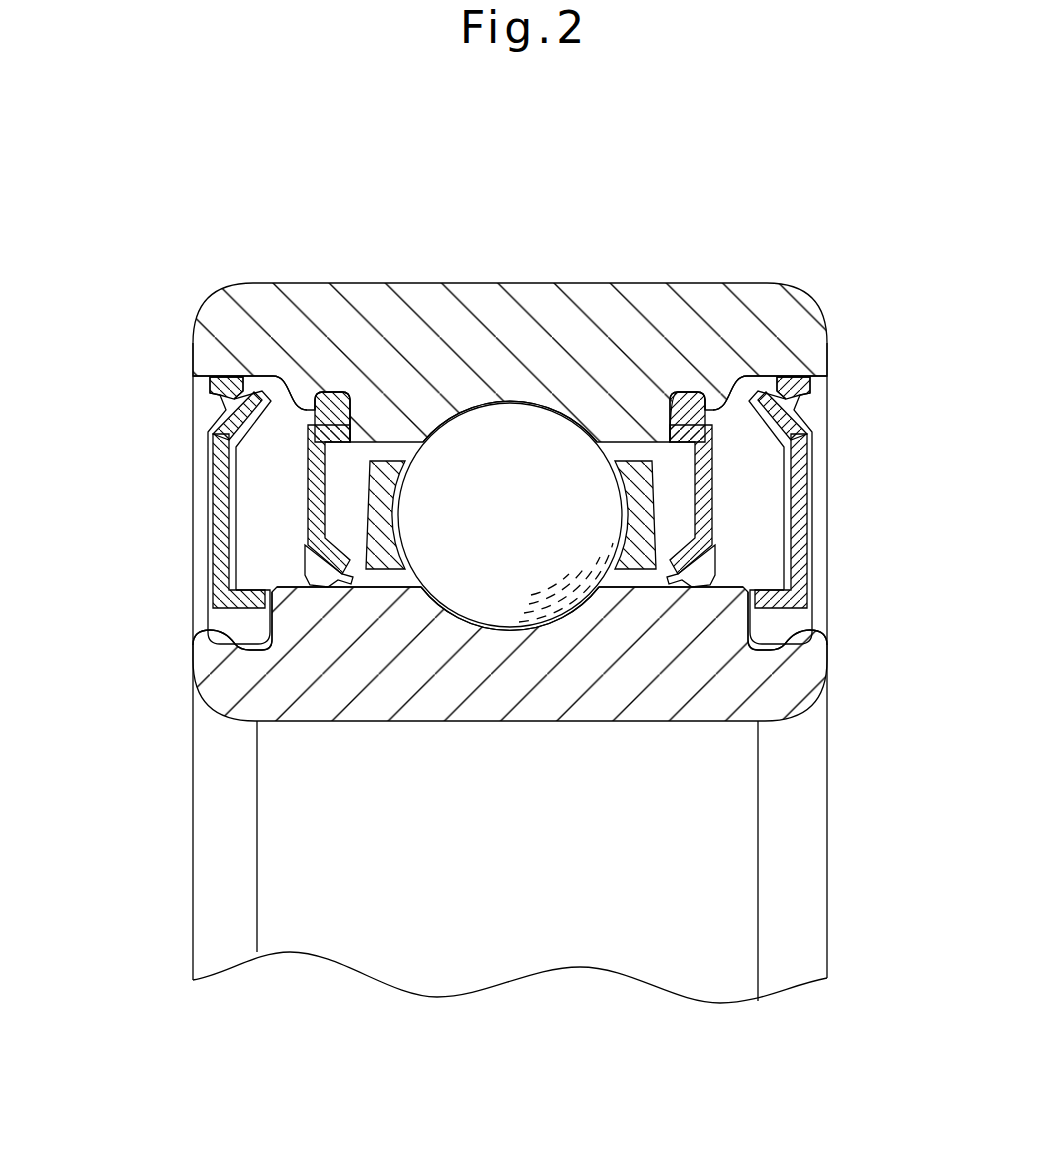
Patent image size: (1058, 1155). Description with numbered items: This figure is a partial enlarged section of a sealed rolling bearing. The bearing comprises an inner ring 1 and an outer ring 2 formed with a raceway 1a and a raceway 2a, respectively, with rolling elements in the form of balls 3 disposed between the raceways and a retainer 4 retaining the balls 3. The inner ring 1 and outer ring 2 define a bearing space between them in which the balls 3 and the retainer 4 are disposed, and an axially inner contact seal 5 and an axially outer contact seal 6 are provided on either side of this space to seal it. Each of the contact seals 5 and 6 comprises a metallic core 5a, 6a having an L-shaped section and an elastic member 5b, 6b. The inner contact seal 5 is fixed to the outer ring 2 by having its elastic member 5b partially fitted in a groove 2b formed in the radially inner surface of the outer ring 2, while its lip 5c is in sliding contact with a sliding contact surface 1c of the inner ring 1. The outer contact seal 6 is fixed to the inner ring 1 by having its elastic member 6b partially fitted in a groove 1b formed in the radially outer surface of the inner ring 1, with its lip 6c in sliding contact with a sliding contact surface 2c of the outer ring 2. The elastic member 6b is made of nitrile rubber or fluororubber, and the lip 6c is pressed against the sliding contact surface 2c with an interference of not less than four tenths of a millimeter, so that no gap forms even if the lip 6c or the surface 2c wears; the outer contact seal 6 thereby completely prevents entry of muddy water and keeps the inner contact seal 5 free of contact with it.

The inner ring 1 is at (497, 726).
The raceway 1a is at (492, 627).
The groove 1b is at (222, 634).
The sliding contact surface 1c is at (347, 589).
The outer ring 2 is at (541, 303).
The raceway 2a is at (545, 440).
The groove 2b is at (328, 392).
The sliding contact surface 2c is at (243, 385).
The balls 3 is at (470, 440).
The retainer 4 is at (632, 470).
The inner contact seal 5 is at (500, 506).
The metallic core 5a is at (691, 499).
The elastic member 5b is at (687, 417).
The lip 5c is at (691, 566).
The outer contact seal 6 is at (499, 494).
The metallic core 6a is at (781, 521).
The elastic member 6b is at (781, 617).
The lip 6c is at (793, 388).